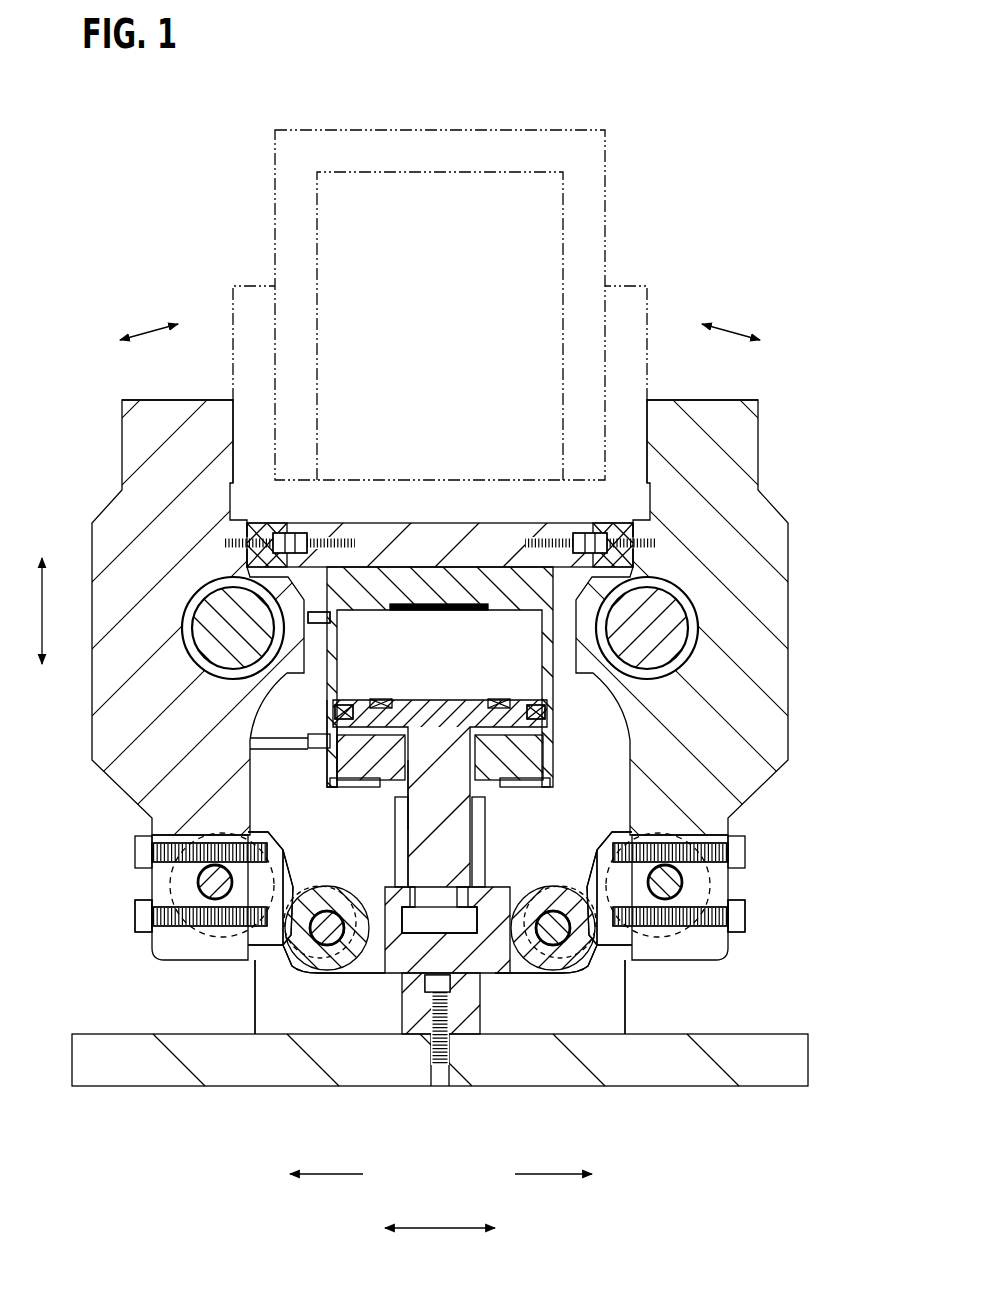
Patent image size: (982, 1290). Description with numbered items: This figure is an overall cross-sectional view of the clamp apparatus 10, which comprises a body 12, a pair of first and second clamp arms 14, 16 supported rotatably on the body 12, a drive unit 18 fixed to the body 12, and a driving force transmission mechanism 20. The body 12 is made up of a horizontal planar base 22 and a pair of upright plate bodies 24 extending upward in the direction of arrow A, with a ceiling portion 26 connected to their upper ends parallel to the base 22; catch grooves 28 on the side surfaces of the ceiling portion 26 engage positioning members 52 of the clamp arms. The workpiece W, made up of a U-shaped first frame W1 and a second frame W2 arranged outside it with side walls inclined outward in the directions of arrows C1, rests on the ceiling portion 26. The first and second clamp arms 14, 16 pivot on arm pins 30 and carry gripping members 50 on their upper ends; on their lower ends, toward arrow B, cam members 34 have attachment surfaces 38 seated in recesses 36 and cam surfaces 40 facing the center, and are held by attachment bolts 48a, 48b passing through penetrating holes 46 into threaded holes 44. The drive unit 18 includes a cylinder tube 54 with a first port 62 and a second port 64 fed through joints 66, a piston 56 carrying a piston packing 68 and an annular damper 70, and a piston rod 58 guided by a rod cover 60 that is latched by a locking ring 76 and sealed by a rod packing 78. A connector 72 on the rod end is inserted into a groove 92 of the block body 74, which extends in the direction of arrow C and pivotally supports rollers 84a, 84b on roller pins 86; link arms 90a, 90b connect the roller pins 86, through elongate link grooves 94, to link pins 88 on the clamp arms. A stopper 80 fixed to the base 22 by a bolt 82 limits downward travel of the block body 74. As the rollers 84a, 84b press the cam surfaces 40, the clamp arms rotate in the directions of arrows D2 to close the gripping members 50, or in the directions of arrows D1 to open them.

The clamp apparatus 10 is at (161, 104).
The body 12 is at (628, 1015).
The first clamp arm 14 is at (97, 770).
The second clamp arm 16 is at (783, 770).
The drive unit 18 is at (428, 669).
The driving force transmission mechanism 20 is at (444, 931).
The base 22 is at (288, 1088).
The plate body 24 is at (359, 1088).
The ceiling portion 26 is at (403, 540).
The catch groove 28 is at (297, 540).
The arm pin 30 is at (208, 612).
The cam member 34 is at (442, 911).
The recess 36 is at (242, 962).
The attachment surface 38 is at (195, 962).
The cam surface 40 is at (287, 880).
The threaded hole 44 is at (243, 850).
The penetrating hole 46 is at (181, 843).
The attachment bolt 48a is at (135, 852).
The attachment bolt 48b is at (135, 916).
The gripping member 50 is at (185, 408).
The positioning member 52 is at (265, 527).
The cylinder tube 54 is at (508, 595).
The piston 56 is at (476, 704).
The piston rod 58 is at (462, 845).
The rod cover 60 is at (366, 760).
The first port 62 is at (338, 620).
The second port 64 is at (330, 730).
The joint 66 is at (318, 620).
The piston packing 68 is at (548, 712).
The damper 70 is at (383, 703).
The connector 72 is at (450, 930).
The block body 74 is at (393, 969).
The locking ring 76 is at (534, 765).
The rod packing 78 is at (470, 768).
The stopper 80 is at (466, 1015).
The bolt 82 is at (452, 984).
The roller 84a is at (330, 972).
The roller 84b is at (552, 972).
The roller pin 86 is at (328, 912).
The link pin 88 is at (198, 880).
The link arm 90a is at (170, 940).
The link arm 90b is at (712, 940).
The groove 92 is at (395, 880).
The link groove 94 is at (290, 965).
The workpiece W is at (590, 127).
The first frame W1 is at (433, 132).
The second frame W2 is at (633, 290).
The arrow direction A is at (42, 596).
The arrow direction B is at (42, 684).
The arrow direction C is at (440, 1214).
The arrow direction C1 is at (441, 1185).
The arrow direction D1 is at (443, 340).
The arrow direction D2 is at (444, 318).